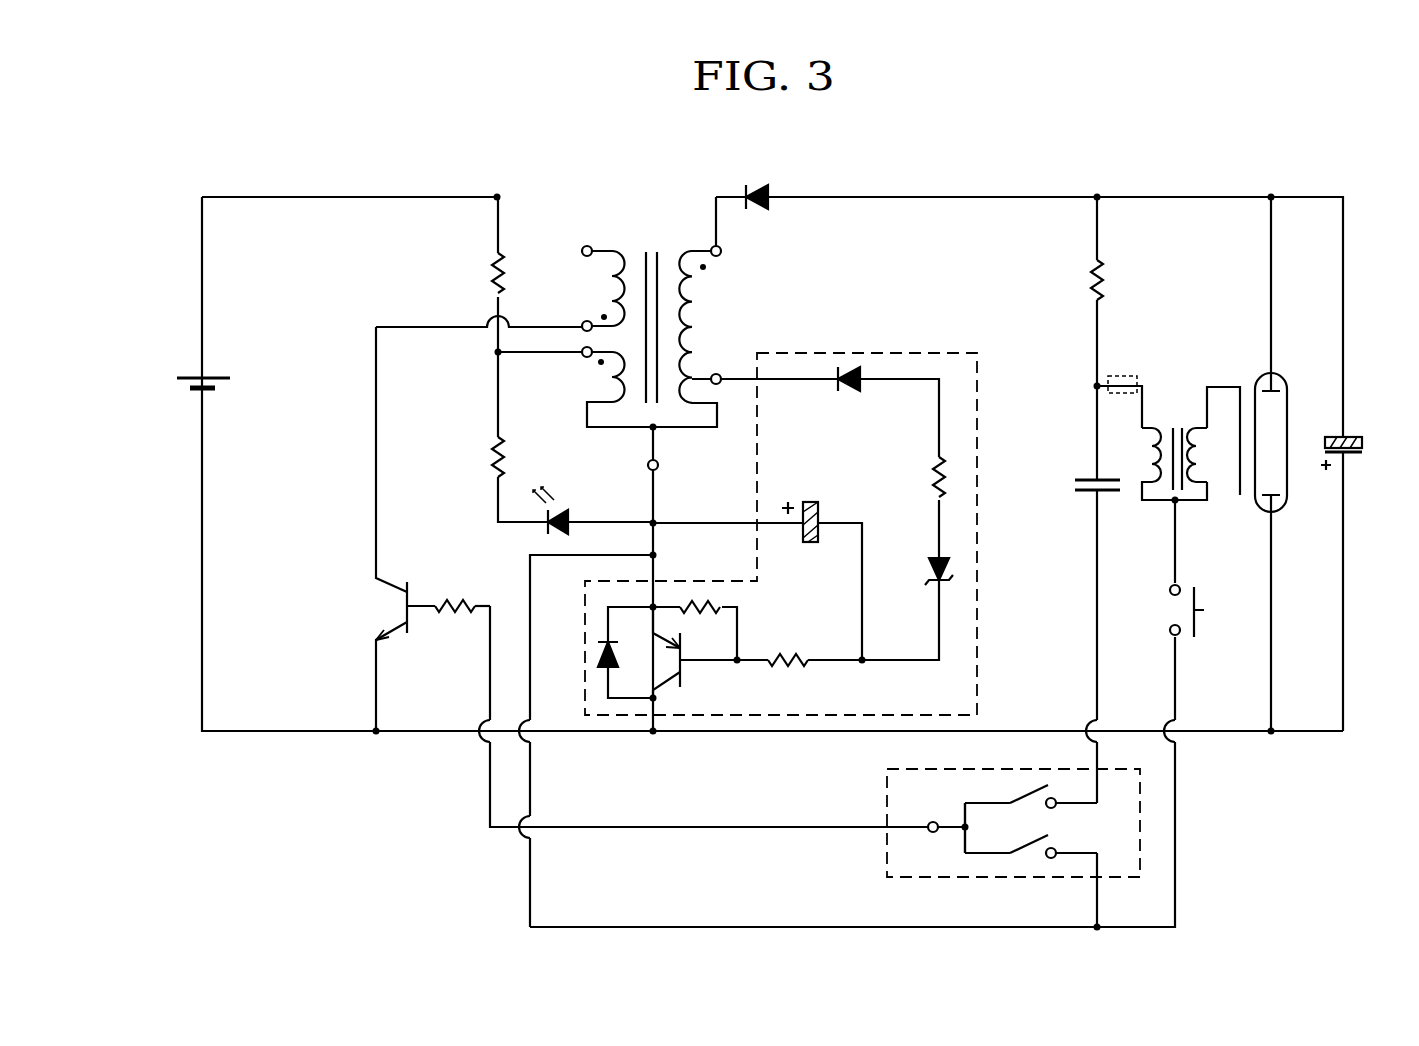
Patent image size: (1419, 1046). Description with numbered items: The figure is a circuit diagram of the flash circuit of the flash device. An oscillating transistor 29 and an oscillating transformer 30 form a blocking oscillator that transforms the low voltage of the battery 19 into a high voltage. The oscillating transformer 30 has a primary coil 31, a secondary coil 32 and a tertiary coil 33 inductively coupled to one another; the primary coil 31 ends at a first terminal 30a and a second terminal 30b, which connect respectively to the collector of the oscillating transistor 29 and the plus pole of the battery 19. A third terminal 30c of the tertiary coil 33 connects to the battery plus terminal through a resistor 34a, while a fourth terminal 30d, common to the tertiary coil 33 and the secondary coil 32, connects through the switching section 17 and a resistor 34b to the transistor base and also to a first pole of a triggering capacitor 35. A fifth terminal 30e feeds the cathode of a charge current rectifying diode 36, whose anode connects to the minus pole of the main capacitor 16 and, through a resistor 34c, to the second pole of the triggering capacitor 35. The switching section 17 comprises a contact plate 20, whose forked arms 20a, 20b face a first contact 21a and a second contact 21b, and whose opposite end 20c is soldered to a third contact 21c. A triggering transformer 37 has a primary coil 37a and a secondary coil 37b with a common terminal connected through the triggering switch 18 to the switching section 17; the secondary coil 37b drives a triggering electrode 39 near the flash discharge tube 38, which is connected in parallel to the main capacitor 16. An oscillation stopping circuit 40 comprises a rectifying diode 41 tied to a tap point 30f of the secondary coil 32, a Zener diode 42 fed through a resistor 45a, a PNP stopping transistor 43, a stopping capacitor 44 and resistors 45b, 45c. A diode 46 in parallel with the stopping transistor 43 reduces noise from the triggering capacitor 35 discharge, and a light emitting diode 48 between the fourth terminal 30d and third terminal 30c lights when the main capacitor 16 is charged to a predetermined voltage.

The main capacitor 16 is at (1352, 432).
The switching section 17 is at (887, 795).
The triggering switch 18 is at (1125, 373).
The battery 19 is at (218, 375).
The contact plate 20 is at (989, 829).
The first arm 20a is at (1034, 842).
The second arm 20b is at (1030, 795).
The end of contact plate 20c is at (953, 832).
The first contact 21a is at (1058, 850).
The second contact 21b is at (1052, 797).
The third contact 21c is at (930, 836).
The oscillating transistor 29 is at (410, 590).
The oscillating transformer 30 is at (664, 311).
The first terminal 30a is at (583, 324).
The second terminal 30b is at (582, 251).
The third terminal 30c is at (583, 356).
The fourth terminal 30d is at (660, 465).
The fifth terminal 30e is at (722, 250).
The tap point 30f is at (718, 372).
The primary coil 31 is at (600, 248).
The secondary coil 32 is at (686, 248).
The tertiary coil 33 is at (590, 400).
The resistor 34a is at (492, 280).
The resistor 34b is at (458, 613).
The resistor 34c is at (1100, 285).
The triggering capacitor 35 is at (1090, 478).
The charge current rectifying diode 36 is at (762, 188).
The triggering transformer 37 is at (1182, 444).
The primary coil 37a is at (1146, 482).
The secondary coil 37b is at (1205, 482).
The flash discharge tube 38 is at (1287, 408).
The triggering electrode 39 is at (1240, 388).
The oscillation stopping circuit 40 is at (866, 352).
The rectifying diode 41 is at (847, 392).
The Zener diode 42 is at (937, 560).
The stopping transistor 43 is at (685, 676).
The stopping capacitor 44 is at (824, 544).
The resistor 45a is at (935, 478).
The resistor 45b is at (800, 664).
The resistor 45c is at (740, 597).
The diode 46 is at (600, 657).
The light emitting diode 48 is at (560, 508).